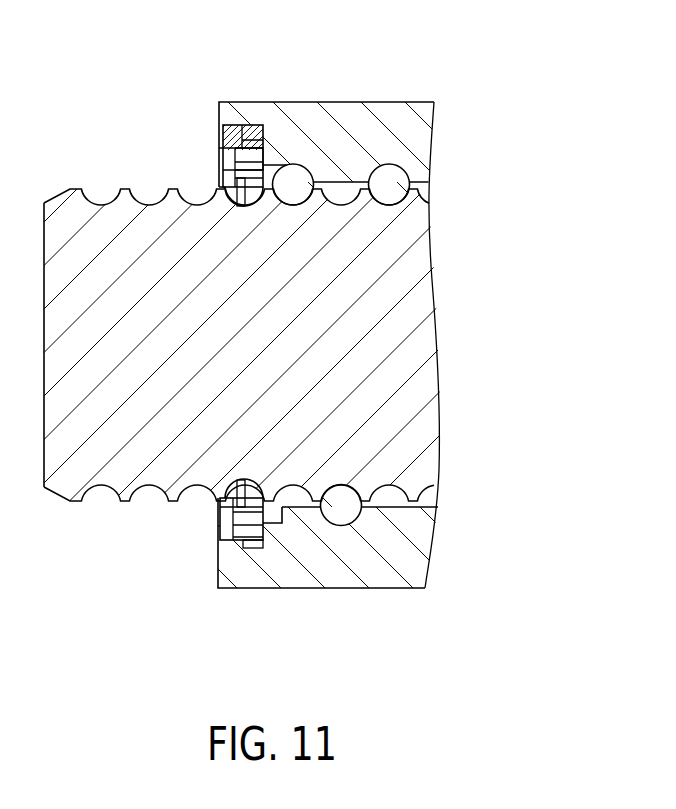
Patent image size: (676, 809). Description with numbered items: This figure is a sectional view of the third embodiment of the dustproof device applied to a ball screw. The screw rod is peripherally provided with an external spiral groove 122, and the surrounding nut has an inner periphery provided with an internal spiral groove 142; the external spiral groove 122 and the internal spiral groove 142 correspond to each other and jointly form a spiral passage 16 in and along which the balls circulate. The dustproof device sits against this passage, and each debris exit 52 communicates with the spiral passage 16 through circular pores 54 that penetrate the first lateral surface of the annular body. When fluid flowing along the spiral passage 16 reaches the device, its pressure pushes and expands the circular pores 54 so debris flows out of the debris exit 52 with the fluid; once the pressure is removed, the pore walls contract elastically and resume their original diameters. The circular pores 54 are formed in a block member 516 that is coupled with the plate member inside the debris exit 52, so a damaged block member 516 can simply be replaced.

The spiral passage 16 is at (525, 115).
The debris exit 52 is at (294, 253).
The circular pore 54 is at (244, 158).
The external spiral groove 122 is at (400, 210).
The internal spiral groove 142 is at (396, 164).
The block member 516 is at (246, 155).